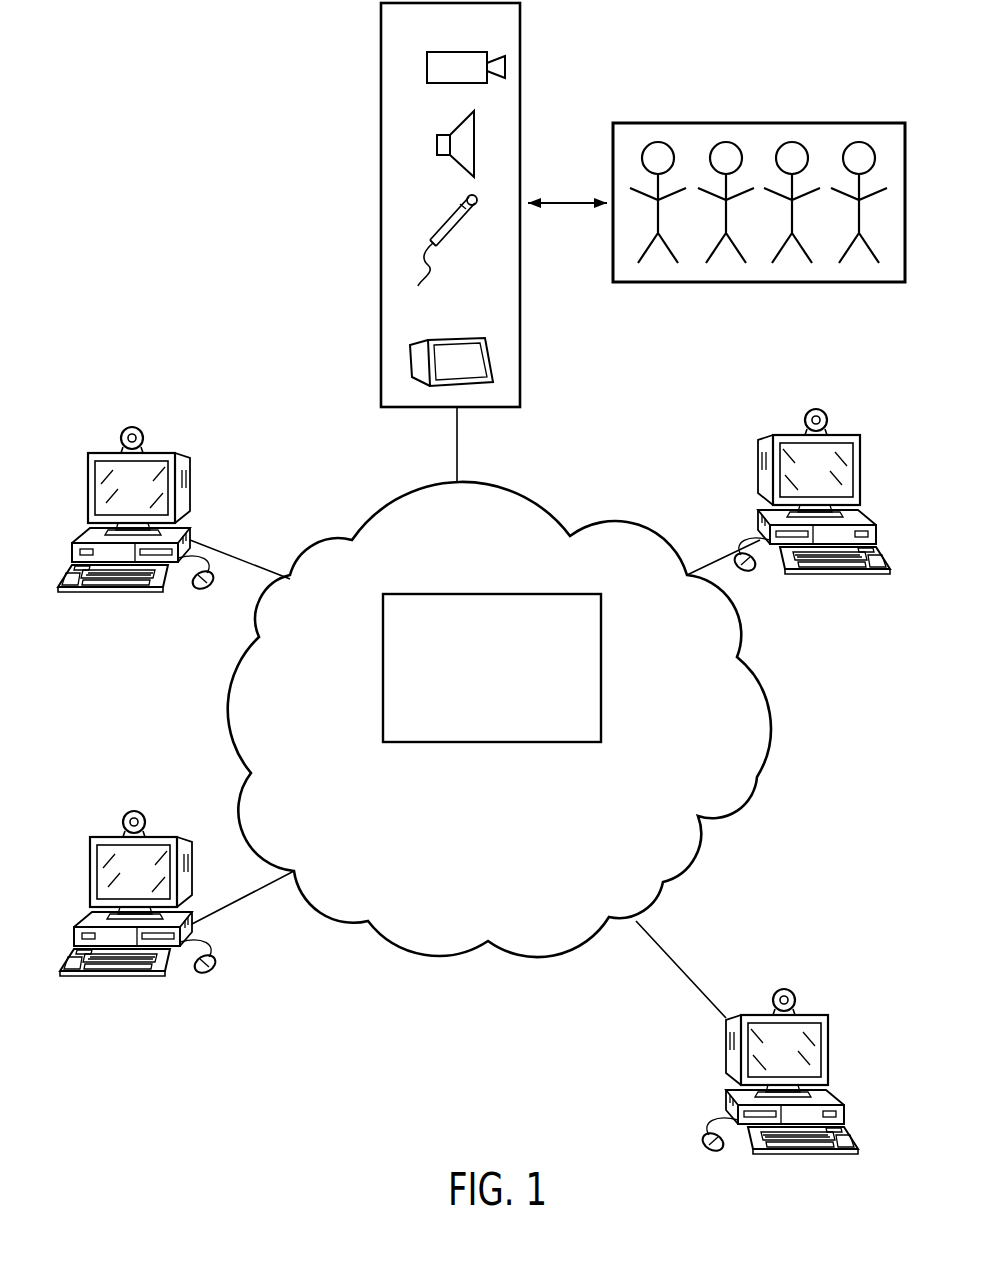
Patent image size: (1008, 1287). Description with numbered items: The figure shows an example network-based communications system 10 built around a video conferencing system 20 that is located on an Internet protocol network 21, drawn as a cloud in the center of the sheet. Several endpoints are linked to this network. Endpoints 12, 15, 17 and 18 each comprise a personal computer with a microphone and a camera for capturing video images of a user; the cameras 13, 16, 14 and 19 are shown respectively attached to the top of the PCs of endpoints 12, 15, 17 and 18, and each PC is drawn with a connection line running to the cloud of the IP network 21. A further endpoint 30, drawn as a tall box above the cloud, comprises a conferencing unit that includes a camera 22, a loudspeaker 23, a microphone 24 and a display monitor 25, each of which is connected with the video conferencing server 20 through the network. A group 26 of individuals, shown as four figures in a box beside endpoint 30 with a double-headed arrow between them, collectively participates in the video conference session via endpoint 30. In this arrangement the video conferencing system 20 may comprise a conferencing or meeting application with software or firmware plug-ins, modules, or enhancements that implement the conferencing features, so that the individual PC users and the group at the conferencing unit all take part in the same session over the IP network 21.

The network-based communications system 10 is at (158, 178).
The endpoint 12 is at (125, 490).
The camera 13 is at (128, 426).
The camera 14 is at (818, 406).
The endpoint 15 is at (126, 873).
The camera 16 is at (132, 810).
The endpoint 17 is at (792, 471).
The endpoint 18 is at (761, 1055).
The camera 19 is at (787, 986).
The video conferencing system 20 is at (603, 672).
The Internet protocol (IP) network 21 is at (478, 879).
The camera 22 is at (451, 50).
The loudspeaker 23 is at (455, 128).
The microphone 24 is at (450, 212).
The display monitor 25 is at (455, 337).
The group of individuals 26 is at (805, 122).
The endpoint 30 is at (380, 73).